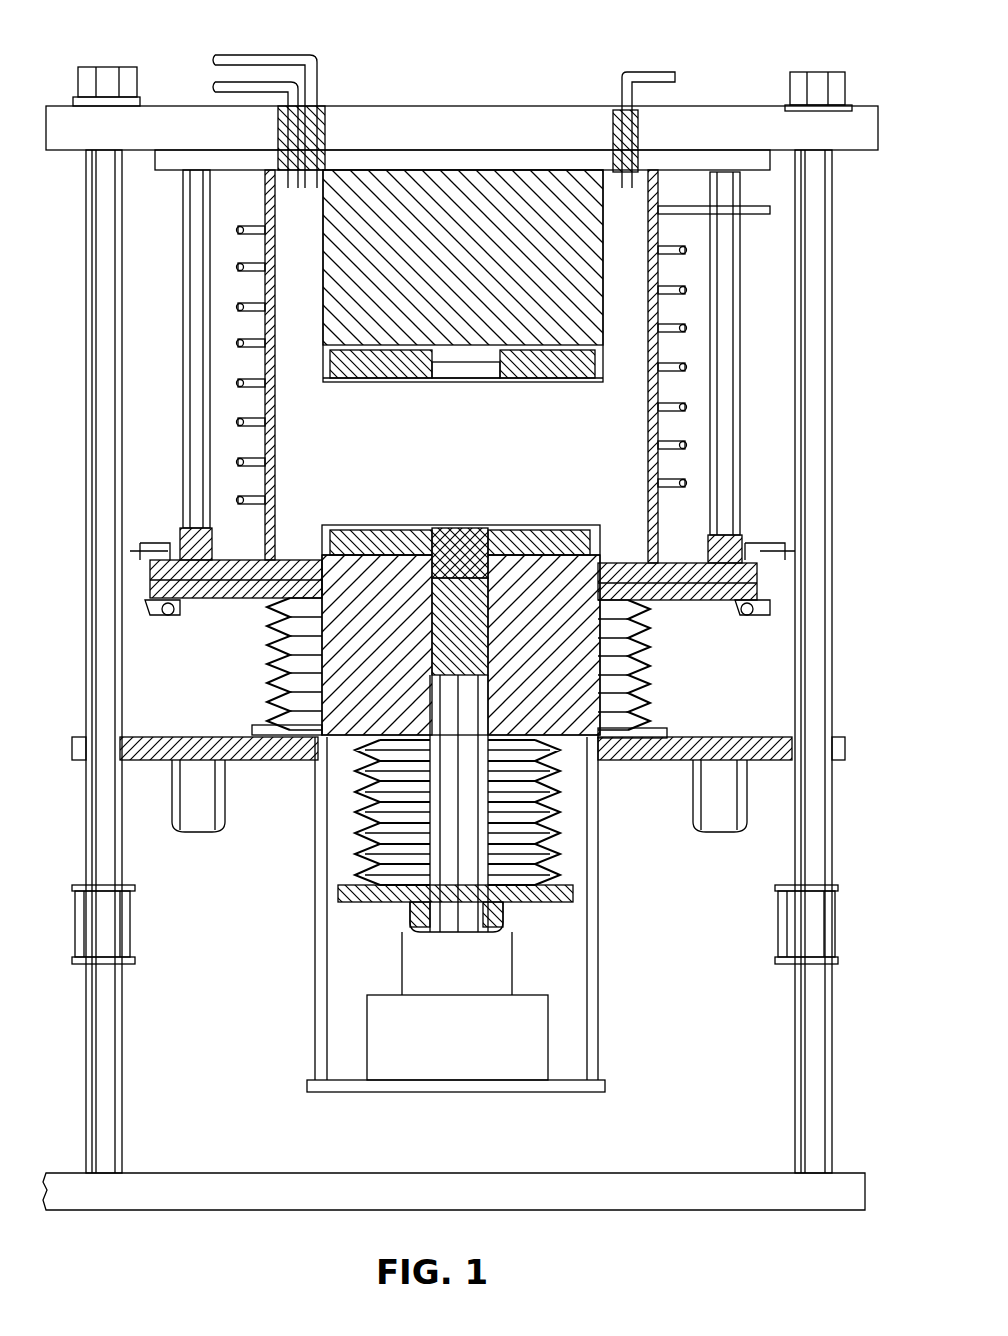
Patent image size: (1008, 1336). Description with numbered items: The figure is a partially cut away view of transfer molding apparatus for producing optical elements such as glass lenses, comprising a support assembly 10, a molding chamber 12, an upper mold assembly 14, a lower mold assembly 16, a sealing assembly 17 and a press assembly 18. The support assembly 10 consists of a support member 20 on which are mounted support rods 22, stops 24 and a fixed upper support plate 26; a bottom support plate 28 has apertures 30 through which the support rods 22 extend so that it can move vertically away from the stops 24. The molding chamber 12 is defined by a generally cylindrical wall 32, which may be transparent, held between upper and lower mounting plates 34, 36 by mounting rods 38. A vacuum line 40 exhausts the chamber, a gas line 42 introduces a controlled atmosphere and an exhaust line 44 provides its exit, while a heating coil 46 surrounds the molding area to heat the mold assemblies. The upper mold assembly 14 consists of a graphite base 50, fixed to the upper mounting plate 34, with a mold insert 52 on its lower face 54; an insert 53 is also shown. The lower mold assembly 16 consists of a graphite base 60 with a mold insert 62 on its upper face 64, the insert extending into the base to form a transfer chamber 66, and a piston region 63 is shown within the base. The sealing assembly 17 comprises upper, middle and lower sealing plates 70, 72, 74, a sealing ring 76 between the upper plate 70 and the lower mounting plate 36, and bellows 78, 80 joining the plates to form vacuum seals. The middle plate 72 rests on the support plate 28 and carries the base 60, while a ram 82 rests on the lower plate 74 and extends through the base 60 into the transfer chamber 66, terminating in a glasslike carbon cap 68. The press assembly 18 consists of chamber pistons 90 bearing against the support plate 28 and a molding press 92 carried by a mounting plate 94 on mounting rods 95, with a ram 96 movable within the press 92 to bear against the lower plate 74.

The support assembly 10 is at (118, 1217).
The molding chamber 12 is at (258, 288).
The upper mold assembly 14 is at (318, 214).
The lower mold assembly 16 is at (350, 523).
The sealing assembly 17 is at (655, 680).
The press assembly 18 is at (355, 970).
The support member 20 is at (168, 1215).
The support rods 22 is at (86, 622).
The stops 24 is at (122, 910).
The fixed upper support plate 26 is at (150, 108).
The bottom support plate 28 is at (170, 737).
The apertures 30 is at (80, 737).
The wall 32 is at (655, 312).
The upper mounting plate 34 is at (760, 170).
The lower mounting plate 36 is at (672, 562).
The mounting rods 38 is at (186, 270).
The vacuum line 40 is at (677, 77).
The gas line 42 is at (262, 60).
The exhaust line 44 is at (215, 77).
The heating coil 46 is at (686, 367).
The graphite base 50 is at (603, 212).
The mold insert 52 is at (560, 380).
The die insert 53 is at (520, 382).
The lower face 54 is at (600, 383).
The graphite base 60 is at (603, 565).
The mold insert 62 is at (540, 530).
The piston 63 is at (515, 533).
The upper face 64 is at (590, 530).
The transfer chamber 66 is at (462, 530).
The cap 68 is at (448, 528).
The upper sealing plate 70 is at (208, 598).
The middle sealing plate 72 is at (260, 726).
The lower sealing plate 74 is at (575, 895).
The sealing ring 76 is at (248, 565).
The bellows 78 is at (270, 677).
The bellows 80 is at (352, 830).
The ram 82 is at (440, 792).
The chamber pistons 90 is at (172, 795).
The molding press 92 is at (513, 970).
The mounting plate 94 is at (570, 1093).
The mounting rods 95 is at (600, 968).
The ram 96 is at (470, 912).